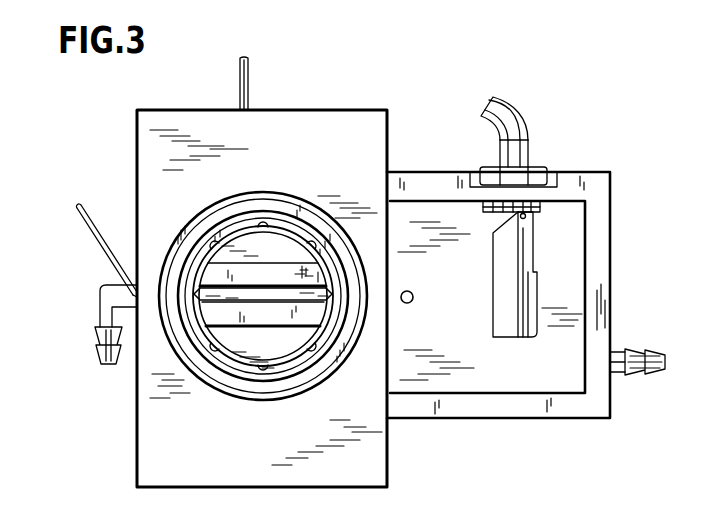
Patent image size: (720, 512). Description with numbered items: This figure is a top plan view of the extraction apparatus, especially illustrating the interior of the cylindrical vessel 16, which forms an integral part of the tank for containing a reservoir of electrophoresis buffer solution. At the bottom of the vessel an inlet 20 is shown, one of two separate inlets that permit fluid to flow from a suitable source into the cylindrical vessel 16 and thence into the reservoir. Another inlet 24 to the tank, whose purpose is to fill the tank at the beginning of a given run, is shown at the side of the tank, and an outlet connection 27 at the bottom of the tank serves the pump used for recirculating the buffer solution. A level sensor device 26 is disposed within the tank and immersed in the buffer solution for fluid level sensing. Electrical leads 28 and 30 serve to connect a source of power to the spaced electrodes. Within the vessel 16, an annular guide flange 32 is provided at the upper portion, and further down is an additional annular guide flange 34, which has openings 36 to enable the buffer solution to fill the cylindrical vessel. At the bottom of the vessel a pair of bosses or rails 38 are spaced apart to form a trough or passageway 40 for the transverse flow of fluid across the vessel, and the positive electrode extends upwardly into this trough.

The cylindrical vessel 16 is at (179, 226).
The inlet 20 is at (99, 297).
The inlet 24 is at (655, 350).
The level sensor device 26 is at (538, 286).
The outlet connection 27 is at (412, 292).
The electrical lead 28 is at (84, 206).
The electrical lead 30 is at (251, 96).
The annular guide flange 32 is at (325, 248).
The annular guide flange 34 is at (218, 236).
The openings 36 is at (267, 224).
The bosses or rails 38 is at (308, 273).
The trough or passageway 40 is at (274, 296).